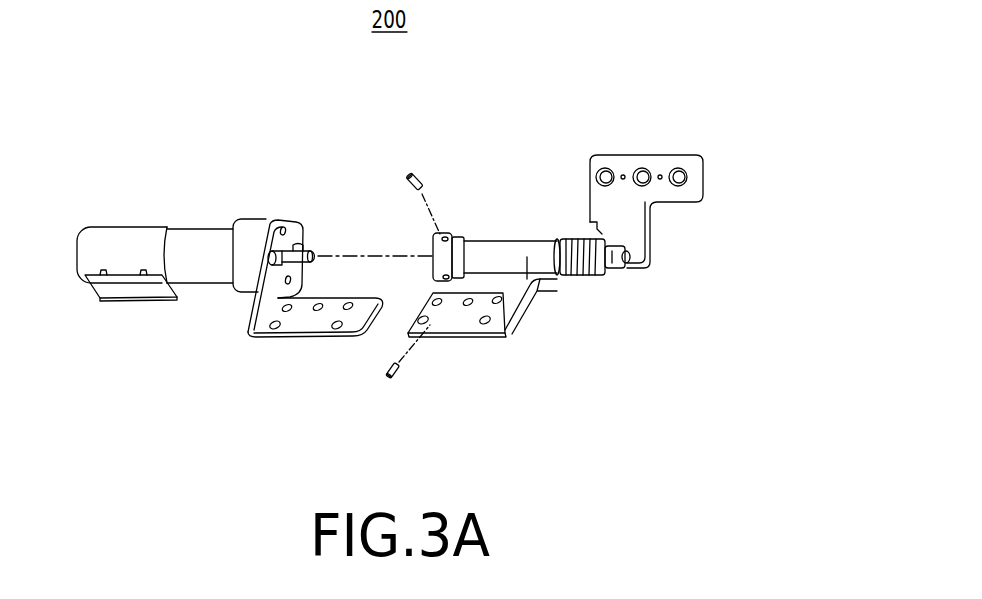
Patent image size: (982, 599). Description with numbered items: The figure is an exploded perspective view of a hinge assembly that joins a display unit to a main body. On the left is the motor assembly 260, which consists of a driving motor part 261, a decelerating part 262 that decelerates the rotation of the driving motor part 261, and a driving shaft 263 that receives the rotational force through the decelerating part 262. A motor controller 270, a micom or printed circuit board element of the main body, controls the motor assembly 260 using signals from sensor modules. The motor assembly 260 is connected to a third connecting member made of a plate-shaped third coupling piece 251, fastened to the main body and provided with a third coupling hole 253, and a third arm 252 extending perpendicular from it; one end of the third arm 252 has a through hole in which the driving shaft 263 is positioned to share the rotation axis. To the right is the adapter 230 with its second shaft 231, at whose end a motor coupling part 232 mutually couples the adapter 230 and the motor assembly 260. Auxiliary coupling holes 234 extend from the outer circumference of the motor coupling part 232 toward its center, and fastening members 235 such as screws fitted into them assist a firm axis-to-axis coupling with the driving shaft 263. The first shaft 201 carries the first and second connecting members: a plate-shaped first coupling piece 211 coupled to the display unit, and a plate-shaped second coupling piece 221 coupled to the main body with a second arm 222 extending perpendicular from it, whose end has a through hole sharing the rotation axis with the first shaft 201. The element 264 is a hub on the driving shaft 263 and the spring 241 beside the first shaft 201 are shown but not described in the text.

The motor assembly 260 is at (213, 130).
The driving motor part 261 is at (117, 240).
The decelerating part 262 is at (198, 240).
The driving shaft 263 is at (290, 240).
The shaft hub 264 is at (275, 236).
The motor controller 270 is at (138, 302).
The third arm 252 is at (247, 304).
The third coupling piece 251 is at (299, 330).
The third coupling hole 253 is at (338, 330).
The fastening members 235 is at (411, 175).
The auxiliary coupling holes 234 is at (444, 276).
The motor coupling part 232 is at (453, 235).
The second shaft 231 is at (510, 250).
The adapter 230 is at (543, 206).
The spring 241 is at (577, 276).
The first shaft 201 is at (630, 257).
The second coupling piece 221 is at (465, 317).
The second arm 222 is at (537, 312).
The first coupling piece 211 is at (703, 177).